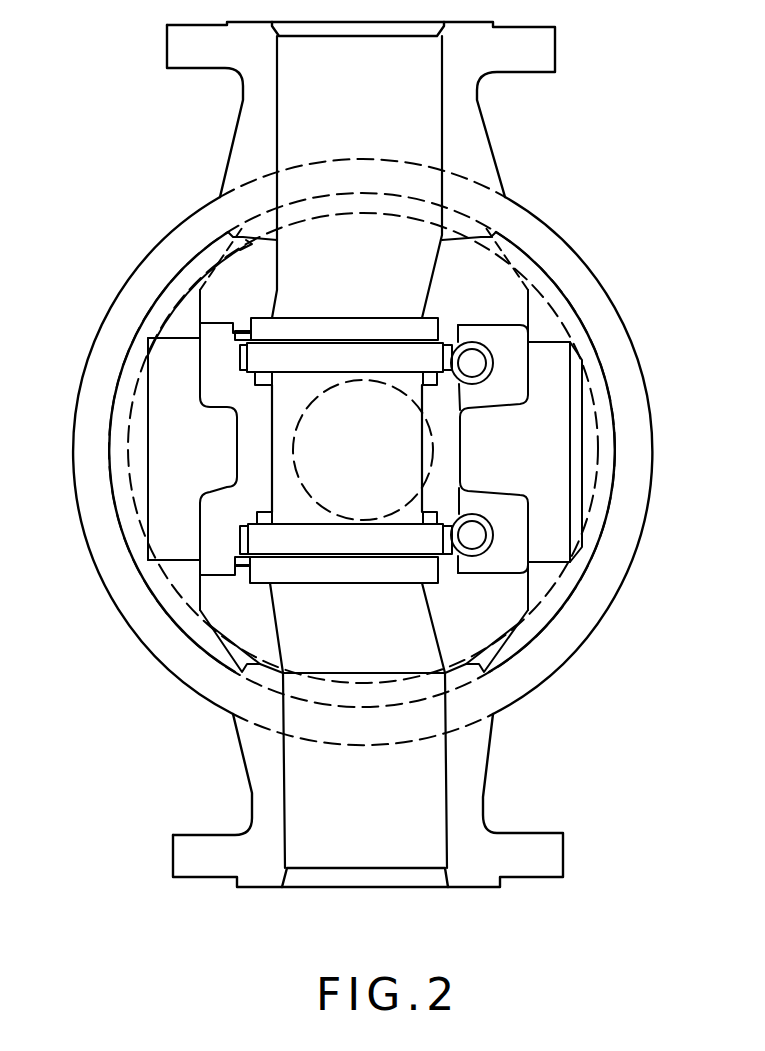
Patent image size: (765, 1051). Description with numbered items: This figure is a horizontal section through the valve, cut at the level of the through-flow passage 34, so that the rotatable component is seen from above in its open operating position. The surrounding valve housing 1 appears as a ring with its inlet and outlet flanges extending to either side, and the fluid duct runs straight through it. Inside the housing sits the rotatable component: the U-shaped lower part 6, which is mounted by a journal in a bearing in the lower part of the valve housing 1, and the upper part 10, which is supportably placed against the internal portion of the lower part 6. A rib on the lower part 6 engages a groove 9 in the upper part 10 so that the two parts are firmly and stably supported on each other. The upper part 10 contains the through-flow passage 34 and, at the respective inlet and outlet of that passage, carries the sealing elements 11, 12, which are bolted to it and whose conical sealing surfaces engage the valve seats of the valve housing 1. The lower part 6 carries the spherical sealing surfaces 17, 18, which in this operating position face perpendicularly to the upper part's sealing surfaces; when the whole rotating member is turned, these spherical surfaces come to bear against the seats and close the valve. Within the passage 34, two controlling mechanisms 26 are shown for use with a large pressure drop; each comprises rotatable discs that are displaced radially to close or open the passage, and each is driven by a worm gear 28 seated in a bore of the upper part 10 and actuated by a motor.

The valve housing 1 is at (90, 388).
The U-shaped lower part 6 is at (150, 470).
The groove 9 is at (512, 490).
The upper part 10 is at (508, 360).
The sealing element 11 is at (468, 247).
The sealing element 12 is at (210, 287).
The spherical sealing surface 17 is at (575, 408).
The spherical sealing surface 18 is at (153, 552).
The controlling mechanism 26 is at (430, 354).
The worm gear 28 is at (472, 368).
The through-flow passage 34 is at (289, 247).